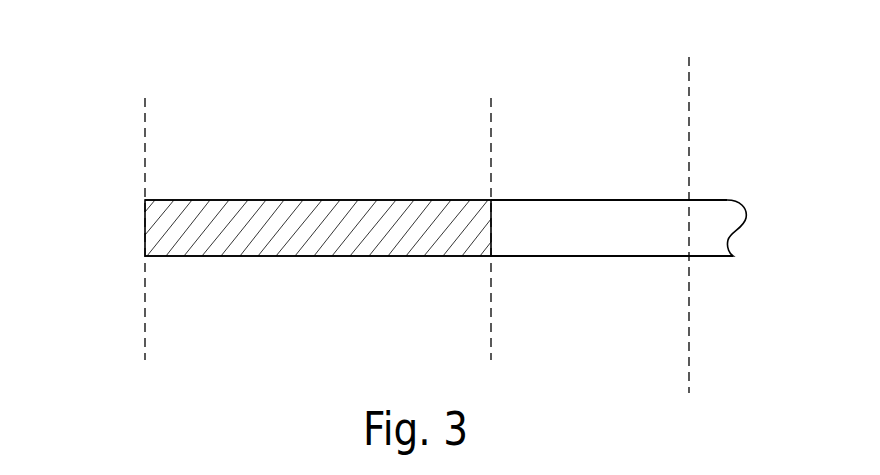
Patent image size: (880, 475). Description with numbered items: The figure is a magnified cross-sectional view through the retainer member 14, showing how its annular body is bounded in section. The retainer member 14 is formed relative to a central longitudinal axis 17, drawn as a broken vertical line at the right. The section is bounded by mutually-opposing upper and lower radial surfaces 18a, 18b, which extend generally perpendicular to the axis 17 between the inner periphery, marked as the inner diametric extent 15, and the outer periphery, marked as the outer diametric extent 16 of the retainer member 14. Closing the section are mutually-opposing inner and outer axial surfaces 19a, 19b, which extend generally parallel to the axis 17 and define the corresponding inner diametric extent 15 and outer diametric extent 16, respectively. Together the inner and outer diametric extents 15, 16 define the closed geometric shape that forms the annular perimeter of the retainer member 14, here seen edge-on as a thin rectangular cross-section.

The retainer member 14 is at (740, 158).
The inner diametric extent 15 is at (492, 120).
The outer diametric extent 16 is at (145, 143).
The central longitudinal axis 17 is at (689, 76).
The upper radial surface 18a is at (303, 199).
The lower radial surface 18b is at (310, 256).
The inner axial surface 19a is at (492, 220).
The outer axial surface 19b is at (145, 246).